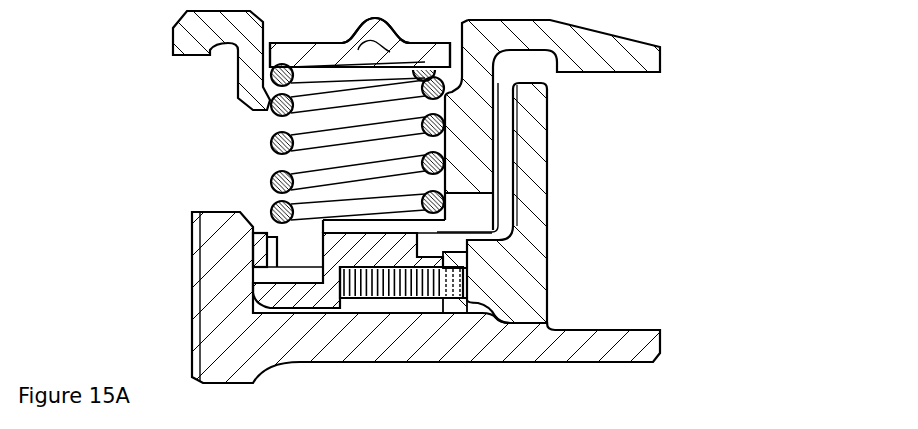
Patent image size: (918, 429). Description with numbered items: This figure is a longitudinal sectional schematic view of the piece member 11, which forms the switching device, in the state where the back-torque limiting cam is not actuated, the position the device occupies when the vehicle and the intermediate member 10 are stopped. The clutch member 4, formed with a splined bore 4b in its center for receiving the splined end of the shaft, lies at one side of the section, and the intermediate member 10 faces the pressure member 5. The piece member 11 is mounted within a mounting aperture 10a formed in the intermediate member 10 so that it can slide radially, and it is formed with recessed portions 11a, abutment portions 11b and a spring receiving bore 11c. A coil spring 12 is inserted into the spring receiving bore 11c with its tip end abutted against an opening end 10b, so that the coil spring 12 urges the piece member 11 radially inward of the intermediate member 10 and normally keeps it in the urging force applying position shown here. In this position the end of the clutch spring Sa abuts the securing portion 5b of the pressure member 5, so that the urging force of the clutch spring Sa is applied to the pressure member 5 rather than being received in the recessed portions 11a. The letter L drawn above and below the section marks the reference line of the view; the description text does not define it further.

The clutch member 4 is at (391, 297).
The splined bore 4b is at (200, 287).
The pressure member 5 is at (655, 61).
The securing portion 5b is at (447, 186).
The intermediate member 10 is at (556, 117).
The mounting aperture 10a is at (345, 315).
The opening end 10b is at (447, 285).
The piece member 11 is at (254, 261).
The recessed portions 11a is at (503, 230).
The abutment portions 11b is at (265, 233).
The spring receiving bore 11c is at (423, 298).
The coil spring 12 is at (453, 282).
The clutch spring Sa is at (270, 147).
The axis line L is at (424, 62).